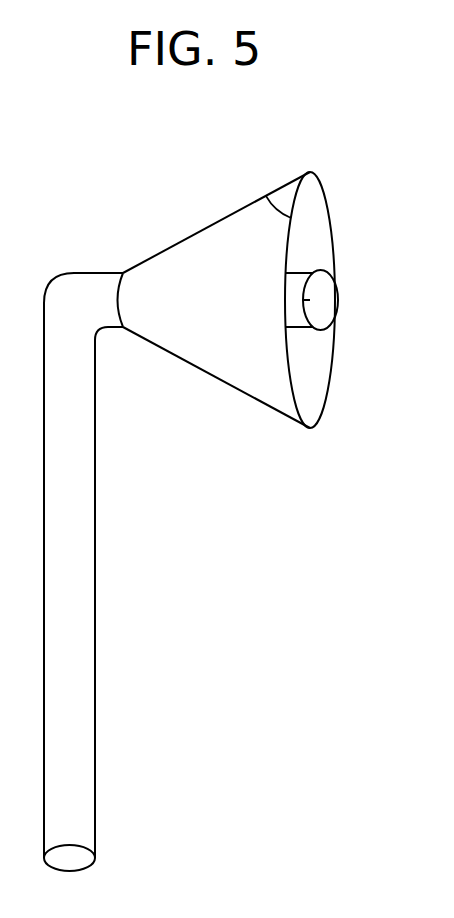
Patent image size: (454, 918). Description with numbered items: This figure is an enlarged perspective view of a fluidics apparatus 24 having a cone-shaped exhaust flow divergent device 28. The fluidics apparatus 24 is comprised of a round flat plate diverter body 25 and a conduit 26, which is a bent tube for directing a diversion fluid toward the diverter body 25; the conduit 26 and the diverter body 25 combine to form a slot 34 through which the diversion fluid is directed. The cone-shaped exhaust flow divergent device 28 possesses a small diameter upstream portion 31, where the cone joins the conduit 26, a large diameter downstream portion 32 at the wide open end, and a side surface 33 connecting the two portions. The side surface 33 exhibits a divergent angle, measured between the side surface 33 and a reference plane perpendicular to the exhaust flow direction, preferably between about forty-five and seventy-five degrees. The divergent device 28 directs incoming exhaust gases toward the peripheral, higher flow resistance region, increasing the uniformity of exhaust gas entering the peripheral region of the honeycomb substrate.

The fluidics apparatus 24 is at (52, 268).
The conduit 26 is at (92, 690).
The small diameter upstream portion 31 is at (128, 334).
The side surface 33 is at (158, 250).
The cone-shaped exhaust flow divergent device 28 is at (260, 375).
The large diameter downstream portion 32 is at (309, 166).
The slot 34 is at (309, 332).
The round flat plate diverter body 25 is at (327, 300).